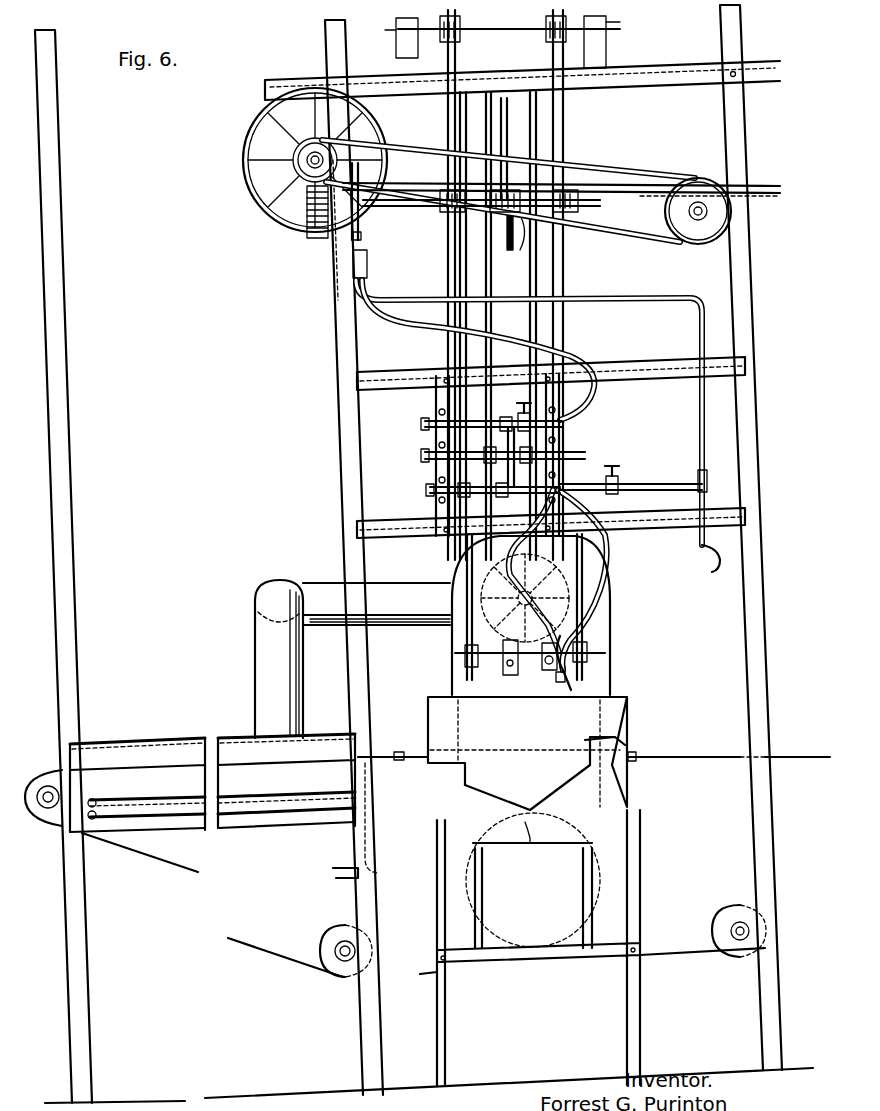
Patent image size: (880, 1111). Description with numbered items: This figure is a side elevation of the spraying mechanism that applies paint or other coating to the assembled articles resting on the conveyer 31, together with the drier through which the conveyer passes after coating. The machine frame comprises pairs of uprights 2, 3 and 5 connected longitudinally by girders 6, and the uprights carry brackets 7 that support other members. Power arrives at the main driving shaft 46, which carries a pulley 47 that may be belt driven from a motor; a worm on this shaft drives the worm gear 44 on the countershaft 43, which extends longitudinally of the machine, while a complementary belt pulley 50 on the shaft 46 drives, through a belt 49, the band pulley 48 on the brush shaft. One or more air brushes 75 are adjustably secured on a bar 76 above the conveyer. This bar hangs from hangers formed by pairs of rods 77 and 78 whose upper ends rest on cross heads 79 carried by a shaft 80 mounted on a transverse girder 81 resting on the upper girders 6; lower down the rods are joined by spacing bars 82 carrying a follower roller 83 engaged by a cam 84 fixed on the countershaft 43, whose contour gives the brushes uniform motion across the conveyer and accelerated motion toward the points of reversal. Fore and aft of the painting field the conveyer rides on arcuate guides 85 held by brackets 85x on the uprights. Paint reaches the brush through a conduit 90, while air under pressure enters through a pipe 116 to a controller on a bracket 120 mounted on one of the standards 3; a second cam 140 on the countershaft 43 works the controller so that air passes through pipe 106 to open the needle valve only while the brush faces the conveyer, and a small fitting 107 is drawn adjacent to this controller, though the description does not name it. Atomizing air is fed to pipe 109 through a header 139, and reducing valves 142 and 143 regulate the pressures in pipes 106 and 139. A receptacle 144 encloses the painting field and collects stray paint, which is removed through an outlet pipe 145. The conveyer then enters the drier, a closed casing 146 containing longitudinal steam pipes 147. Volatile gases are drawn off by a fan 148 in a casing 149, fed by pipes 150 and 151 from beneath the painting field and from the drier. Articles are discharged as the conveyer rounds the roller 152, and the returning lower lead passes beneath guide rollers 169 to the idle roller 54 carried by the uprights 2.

The uprights 2 is at (770, 1000).
The uprights 3 is at (376, 1018).
The uprights 5 is at (82, 1004).
The girders 6 is at (670, 75).
The brackets 7 is at (362, 398).
The conveyer 31 is at (790, 728).
The countershaft 43 is at (620, 195).
The worm gear 44 is at (317, 240).
The main driving shaft 46 is at (314, 162).
The pulley 47 is at (250, 126).
The band pulley 48 is at (695, 170).
The belt 49 is at (405, 165).
The belt pulley 50 is at (297, 150).
The idle roller 54 is at (748, 888).
The air brushes 75 is at (575, 680).
The bar 76 is at (590, 652).
The rods 77 is at (572, 278).
The rods 78 is at (460, 265).
The cross heads 79 is at (538, 52).
The shaft 80 is at (509, 39).
The transverse girder 81 is at (618, 44).
The cross heads or spacing bars 82 is at (612, 208).
The follower roller 83 is at (511, 246).
The cam 84 is at (508, 153).
The arcuate guides 85 is at (660, 770).
The brackets 85x is at (690, 750).
The conduit 90 is at (585, 450).
The pipe 106 is at (572, 360).
The fitting 107 is at (368, 260).
The pipe 109 is at (505, 505).
The pipe 116 is at (722, 563).
The bracket 120 is at (342, 290).
The header 139 is at (645, 484).
The cam 140 is at (362, 236).
The reducing valve 142 is at (512, 408).
The reducing valve 143 is at (617, 471).
The receptacle 144 is at (625, 712).
The outlet pipe 145 is at (530, 830).
The closed casing 146 is at (258, 737).
The steam pipes 147 is at (295, 815).
The fan 148 is at (605, 582).
The casing 149 is at (610, 610).
The pipe 150 is at (598, 865).
The pipe 151 is at (255, 648).
The roller 152 is at (48, 815).
The guide rollers 169 is at (340, 970).